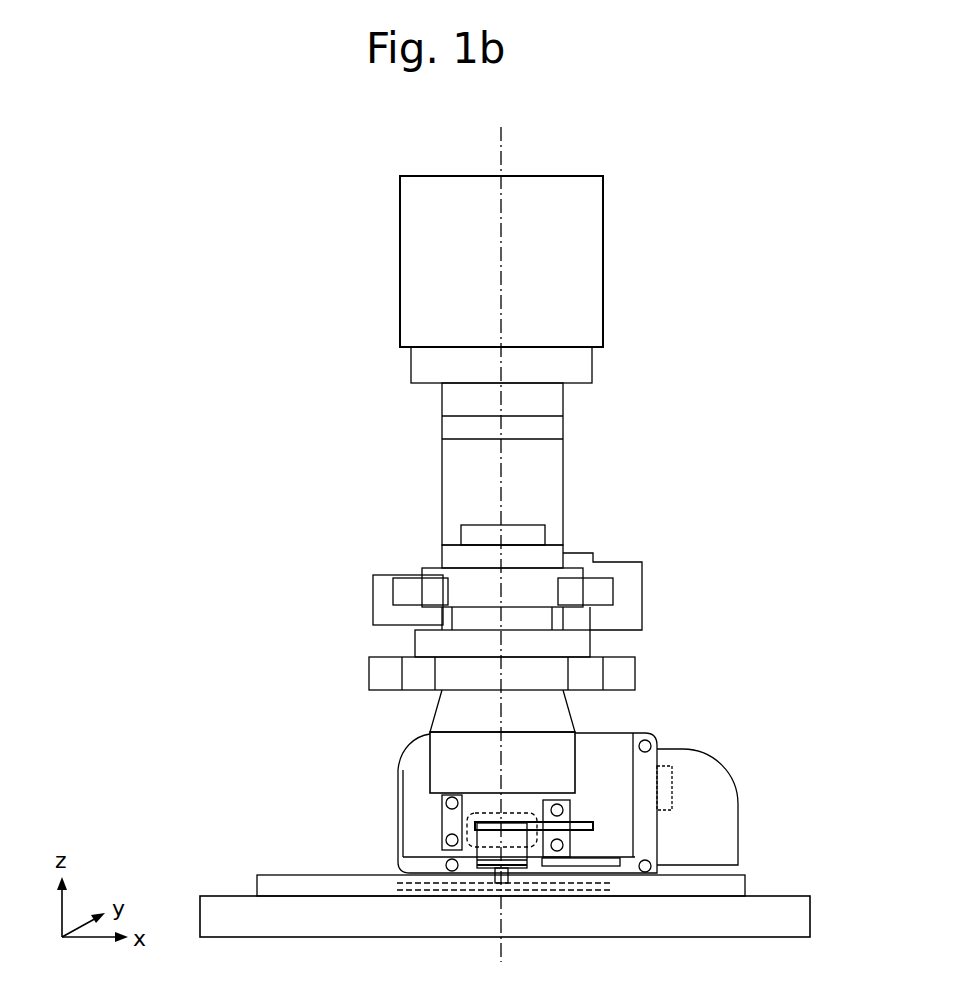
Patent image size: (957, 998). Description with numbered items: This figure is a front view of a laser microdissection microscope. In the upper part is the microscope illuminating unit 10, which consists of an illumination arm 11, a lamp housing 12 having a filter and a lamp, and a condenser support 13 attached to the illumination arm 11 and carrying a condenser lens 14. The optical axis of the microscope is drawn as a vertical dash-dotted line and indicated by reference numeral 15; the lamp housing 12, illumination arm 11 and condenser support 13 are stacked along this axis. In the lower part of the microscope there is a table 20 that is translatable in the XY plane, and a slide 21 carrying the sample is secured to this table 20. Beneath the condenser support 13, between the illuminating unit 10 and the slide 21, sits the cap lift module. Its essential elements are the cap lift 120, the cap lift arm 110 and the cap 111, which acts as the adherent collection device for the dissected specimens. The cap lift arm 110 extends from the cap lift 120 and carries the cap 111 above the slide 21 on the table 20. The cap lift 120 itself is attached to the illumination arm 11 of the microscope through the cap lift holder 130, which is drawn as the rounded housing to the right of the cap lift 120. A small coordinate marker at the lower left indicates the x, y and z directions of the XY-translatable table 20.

The microscope illuminating unit 10 is at (553, 403).
The illumination arm 11 is at (442, 478).
The lamp housing 12 is at (427, 223).
The condenser support 13 is at (533, 483).
The condenser lens 14 is at (530, 590).
The optical axis 15 is at (500, 147).
The table 20 is at (685, 913).
The slide 21 is at (535, 885).
The cap lift arm 110 is at (475, 822).
The cap 111 is at (498, 873).
The cap lift 120 is at (603, 757).
The cap lift holder 130 is at (722, 827).